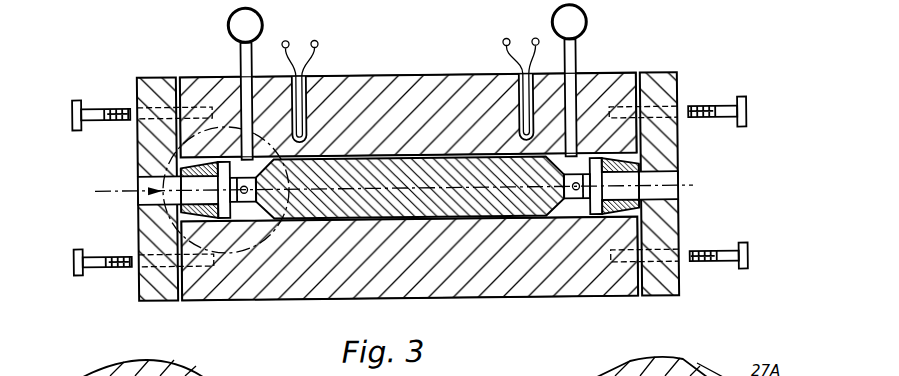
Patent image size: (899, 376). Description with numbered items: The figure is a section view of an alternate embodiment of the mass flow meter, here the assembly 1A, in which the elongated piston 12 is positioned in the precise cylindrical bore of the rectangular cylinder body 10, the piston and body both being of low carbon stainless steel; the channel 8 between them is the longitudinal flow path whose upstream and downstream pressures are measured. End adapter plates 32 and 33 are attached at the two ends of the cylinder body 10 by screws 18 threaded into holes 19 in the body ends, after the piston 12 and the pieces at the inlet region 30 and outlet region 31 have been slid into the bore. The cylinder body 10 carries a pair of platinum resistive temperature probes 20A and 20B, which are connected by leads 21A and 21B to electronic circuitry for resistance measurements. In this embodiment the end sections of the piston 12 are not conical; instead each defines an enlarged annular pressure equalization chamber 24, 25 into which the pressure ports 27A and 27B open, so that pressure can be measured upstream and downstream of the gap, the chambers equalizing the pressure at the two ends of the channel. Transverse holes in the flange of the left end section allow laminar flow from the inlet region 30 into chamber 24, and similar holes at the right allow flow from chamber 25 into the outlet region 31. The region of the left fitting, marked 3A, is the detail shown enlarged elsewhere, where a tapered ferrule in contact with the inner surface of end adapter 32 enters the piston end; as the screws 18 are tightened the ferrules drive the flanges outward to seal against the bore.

The viscometer assembly 1A is at (343, 302).
The detail region of fitting 3A is at (263, 219).
The capillary tube 8 is at (452, 186).
The cylinder body 10 is at (427, 285).
The elongated piston 12 is at (407, 209).
The screws 18 is at (73, 106).
The holes 19 is at (208, 104).
The platinum resistive temperature probe 20A is at (308, 93).
The platinum resistive temperature probe 20B is at (520, 104).
The leads 21A is at (303, 47).
The leads 21B is at (514, 47).
The pressure equalization chamber 24 is at (249, 217).
The pressure equalization chamber 25 is at (574, 217).
The pressure port 27A is at (242, 58).
The pressure port 27B is at (580, 63).
The inlet region 30 is at (150, 199).
The outlet region 31 is at (674, 191).
The end adapter plate 32 is at (152, 78).
The end adapter plate 33 is at (673, 75).